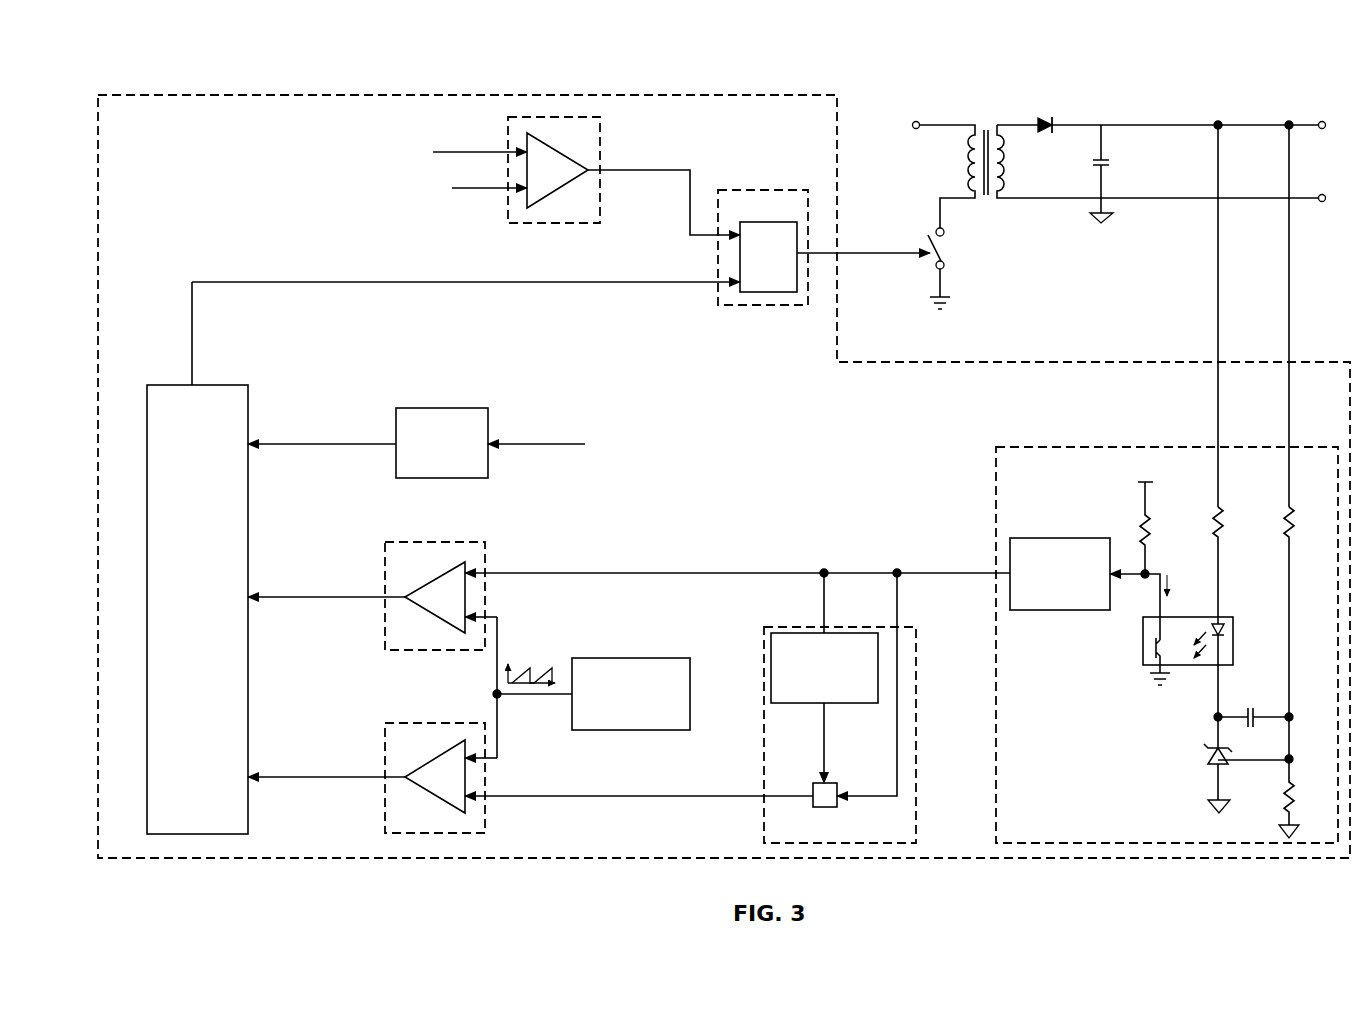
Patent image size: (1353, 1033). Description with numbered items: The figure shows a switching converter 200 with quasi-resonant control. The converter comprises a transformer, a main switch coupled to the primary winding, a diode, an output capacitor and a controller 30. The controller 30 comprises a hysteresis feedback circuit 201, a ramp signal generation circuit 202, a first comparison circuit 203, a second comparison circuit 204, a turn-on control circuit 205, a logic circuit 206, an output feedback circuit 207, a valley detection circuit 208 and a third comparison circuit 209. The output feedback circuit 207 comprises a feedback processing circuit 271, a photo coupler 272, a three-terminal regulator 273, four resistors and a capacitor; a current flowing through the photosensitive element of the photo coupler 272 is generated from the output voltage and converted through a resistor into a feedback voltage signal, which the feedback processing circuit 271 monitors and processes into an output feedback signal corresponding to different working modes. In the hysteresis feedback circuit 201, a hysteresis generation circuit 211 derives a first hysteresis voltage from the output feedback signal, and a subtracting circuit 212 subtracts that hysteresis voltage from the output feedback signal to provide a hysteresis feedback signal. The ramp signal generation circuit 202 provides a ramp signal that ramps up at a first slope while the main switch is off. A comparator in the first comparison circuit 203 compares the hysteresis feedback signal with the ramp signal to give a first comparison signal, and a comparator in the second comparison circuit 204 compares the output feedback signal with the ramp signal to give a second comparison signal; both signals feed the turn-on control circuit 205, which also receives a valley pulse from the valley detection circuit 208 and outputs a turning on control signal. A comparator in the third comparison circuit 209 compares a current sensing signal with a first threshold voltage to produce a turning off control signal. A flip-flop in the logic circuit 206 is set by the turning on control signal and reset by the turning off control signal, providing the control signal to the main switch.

The switching converter 200 is at (810, 47).
The controller 30 is at (1100, 363).
The turn-on control circuit 205 is at (147, 778).
The logic circuit 206 is at (745, 190).
The output feedback circuit 207 is at (1085, 447).
The valley detection circuit 208 is at (396, 470).
The third comparison circuit 209 is at (600, 146).
The hysteresis feedback circuit 201 is at (820, 697).
The ramp signal generation circuit 202 is at (590, 730).
The first comparison circuit 203 is at (385, 822).
The second comparison circuit 204 is at (385, 640).
The hysteresis generation circuit 211 is at (815, 703).
The subtracting circuit 212 is at (826, 807).
The feedback processing circuit 271 is at (1062, 610).
The photo coupler 272 is at (1143, 640).
The three-terminal regulator 273 is at (1213, 770).